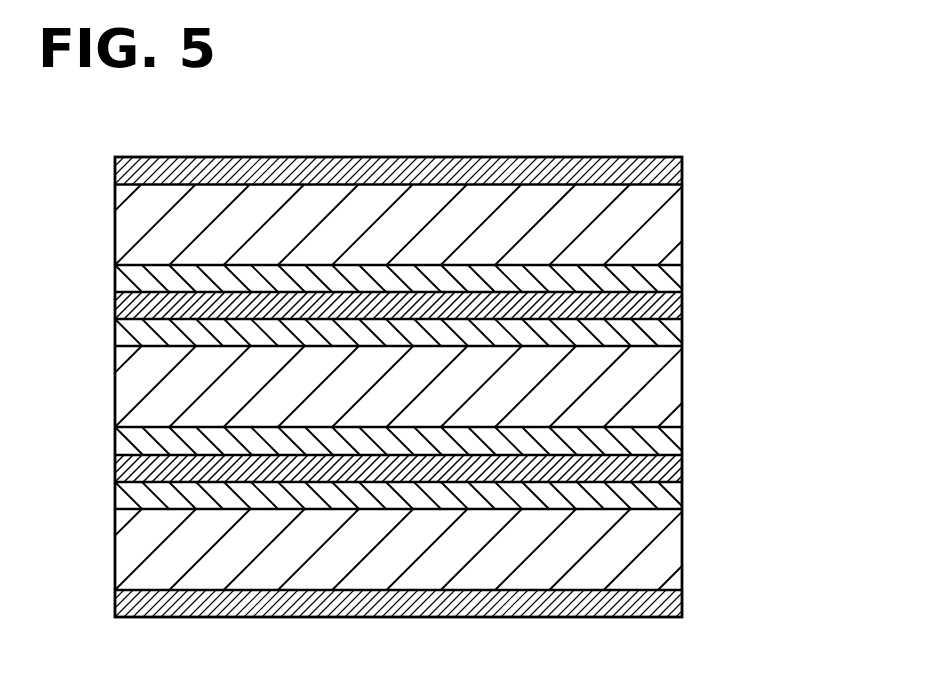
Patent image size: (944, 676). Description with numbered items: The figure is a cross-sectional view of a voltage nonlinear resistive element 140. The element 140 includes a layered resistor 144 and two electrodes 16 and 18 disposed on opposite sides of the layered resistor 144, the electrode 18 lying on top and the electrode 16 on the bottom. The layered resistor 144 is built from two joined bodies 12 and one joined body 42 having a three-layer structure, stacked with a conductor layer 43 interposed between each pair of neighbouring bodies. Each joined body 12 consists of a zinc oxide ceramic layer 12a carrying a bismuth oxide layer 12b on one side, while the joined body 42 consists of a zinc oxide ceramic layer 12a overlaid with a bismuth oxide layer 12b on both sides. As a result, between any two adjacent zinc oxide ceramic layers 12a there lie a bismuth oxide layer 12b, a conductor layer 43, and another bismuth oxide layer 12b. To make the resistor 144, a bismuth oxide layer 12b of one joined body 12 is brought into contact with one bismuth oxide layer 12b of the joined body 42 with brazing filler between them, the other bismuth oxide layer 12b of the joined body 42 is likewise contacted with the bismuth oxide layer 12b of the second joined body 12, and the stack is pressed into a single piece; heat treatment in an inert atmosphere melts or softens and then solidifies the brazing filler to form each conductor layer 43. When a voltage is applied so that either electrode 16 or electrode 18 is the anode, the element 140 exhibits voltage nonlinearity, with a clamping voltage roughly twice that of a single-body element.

The voltage nonlinear resistive element 140 is at (665, 144).
The layered resistor 144 is at (102, 185).
The electrode 18 is at (668, 168).
The electrode 16 is at (668, 602).
The joined body 12 is at (790, 185).
The zinc oxide ceramic layer 12a is at (668, 217).
The bismuth oxide layer 12b is at (668, 282).
The joined body having a three-layer structure 42 is at (790, 320).
The conductor layer 43 is at (668, 307).